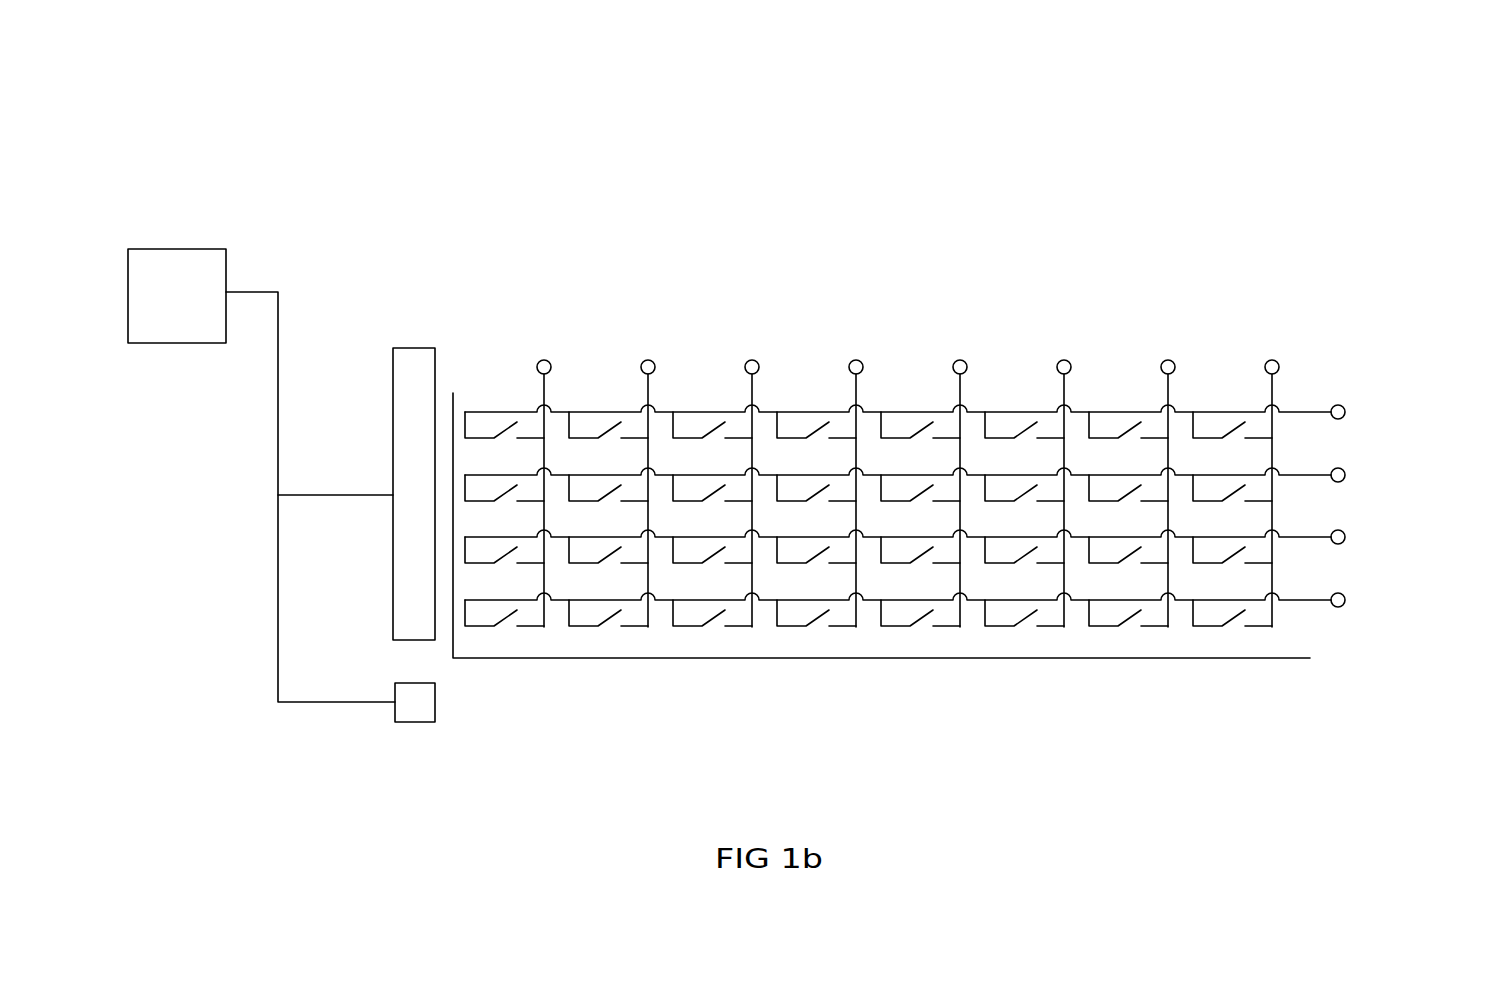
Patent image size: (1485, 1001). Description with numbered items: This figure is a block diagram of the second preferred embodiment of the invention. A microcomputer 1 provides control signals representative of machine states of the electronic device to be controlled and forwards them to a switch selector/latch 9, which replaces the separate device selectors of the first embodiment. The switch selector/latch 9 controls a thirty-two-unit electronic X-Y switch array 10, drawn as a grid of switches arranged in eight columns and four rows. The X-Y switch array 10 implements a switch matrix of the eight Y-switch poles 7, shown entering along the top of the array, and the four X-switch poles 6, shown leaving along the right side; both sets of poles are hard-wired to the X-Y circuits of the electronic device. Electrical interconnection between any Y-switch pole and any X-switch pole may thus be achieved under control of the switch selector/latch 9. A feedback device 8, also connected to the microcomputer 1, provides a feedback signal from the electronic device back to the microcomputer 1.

The microcomputer 1 is at (115, 312).
The X-switch poles 6 is at (1363, 600).
The Y-switch poles 7 is at (1272, 329).
The feedback device 8 is at (383, 728).
The switch selector/latch 9 is at (387, 588).
The X-Y switch array 10 is at (455, 660).